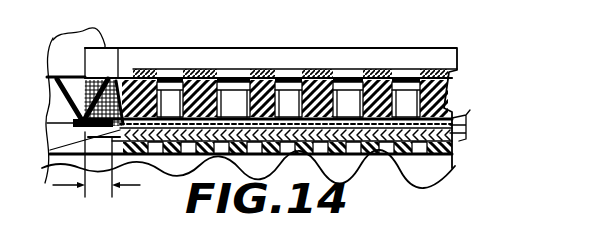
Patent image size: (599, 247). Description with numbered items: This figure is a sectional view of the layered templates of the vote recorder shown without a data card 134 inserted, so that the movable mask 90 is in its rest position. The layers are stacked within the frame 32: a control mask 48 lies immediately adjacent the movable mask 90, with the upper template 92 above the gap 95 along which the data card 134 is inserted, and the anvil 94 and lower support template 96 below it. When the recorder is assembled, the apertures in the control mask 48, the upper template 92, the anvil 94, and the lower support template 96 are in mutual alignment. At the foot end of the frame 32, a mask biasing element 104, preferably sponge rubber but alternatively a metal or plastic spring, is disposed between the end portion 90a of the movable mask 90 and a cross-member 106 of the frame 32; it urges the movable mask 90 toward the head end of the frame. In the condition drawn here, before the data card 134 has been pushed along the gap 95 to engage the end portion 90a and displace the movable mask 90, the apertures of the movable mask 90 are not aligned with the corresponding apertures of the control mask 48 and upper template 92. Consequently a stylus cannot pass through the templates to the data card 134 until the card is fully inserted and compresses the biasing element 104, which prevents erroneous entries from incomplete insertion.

The frame 32 is at (384, 44).
The control mask 48 is at (152, 68).
The movable mask 90 is at (232, 117).
The end portion of the movable mask 90a is at (83, 174).
The upper template 92 is at (264, 117).
The anvil 94 is at (364, 145).
The gap 95 is at (180, 124).
The lower support template 96 is at (441, 157).
The mask biasing element 104 is at (105, 75).
The cross-member 106 is at (48, 77).
The data card 134 is at (297, 117).